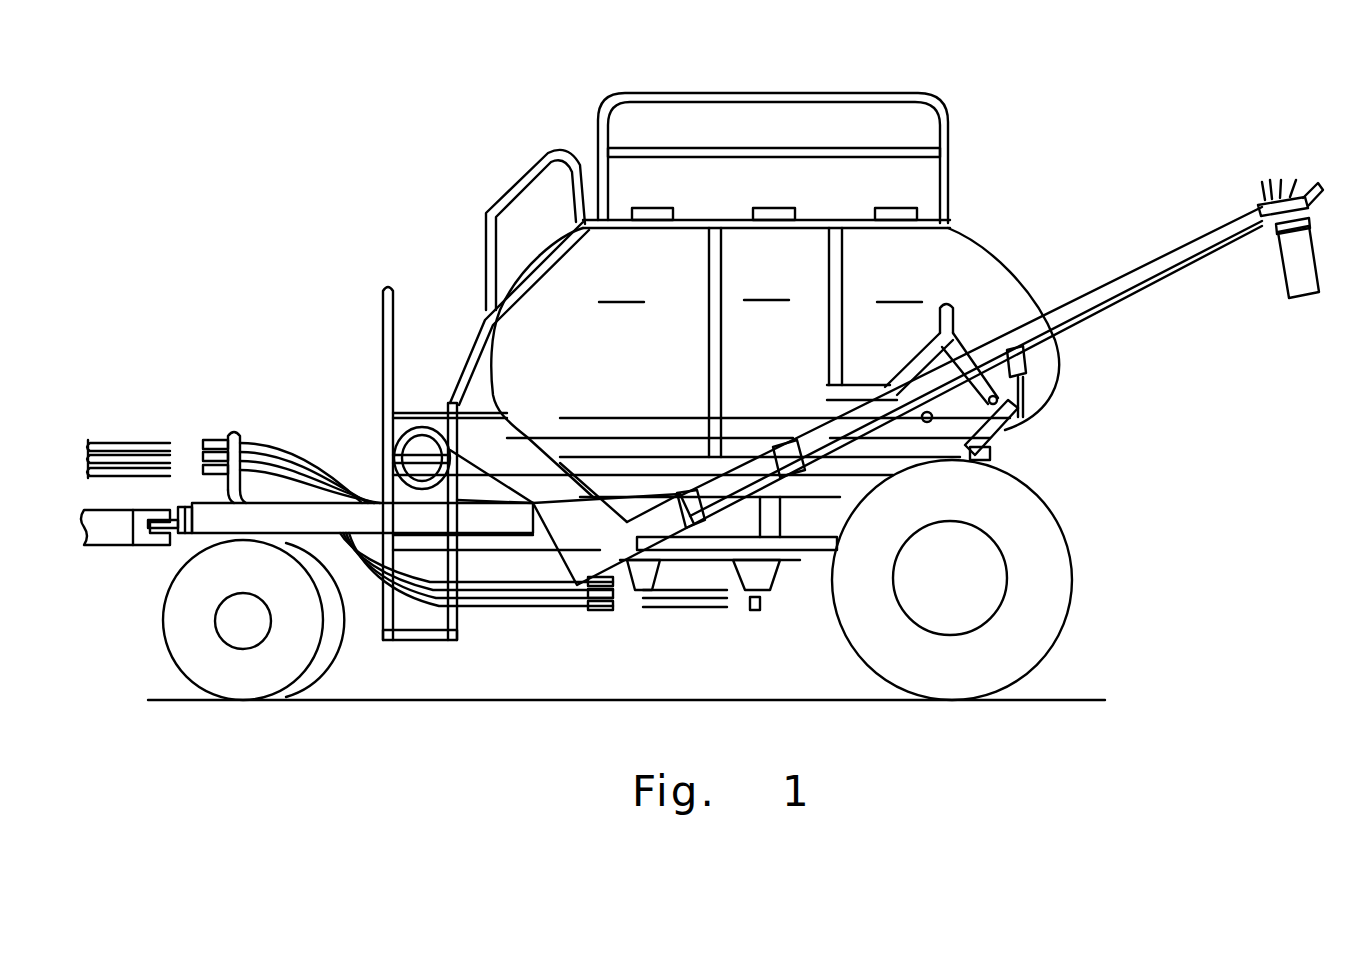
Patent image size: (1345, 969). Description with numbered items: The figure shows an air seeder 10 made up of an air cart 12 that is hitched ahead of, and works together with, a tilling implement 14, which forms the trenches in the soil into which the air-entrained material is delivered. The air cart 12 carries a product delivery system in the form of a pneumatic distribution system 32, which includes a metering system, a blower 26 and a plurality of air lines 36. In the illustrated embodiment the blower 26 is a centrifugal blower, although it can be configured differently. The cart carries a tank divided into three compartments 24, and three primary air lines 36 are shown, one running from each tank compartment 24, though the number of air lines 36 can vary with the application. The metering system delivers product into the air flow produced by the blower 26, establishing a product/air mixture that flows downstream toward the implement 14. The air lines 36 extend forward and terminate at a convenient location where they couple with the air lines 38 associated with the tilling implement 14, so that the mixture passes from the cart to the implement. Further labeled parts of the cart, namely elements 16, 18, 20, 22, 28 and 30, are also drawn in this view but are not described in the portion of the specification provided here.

The air seeder 10 is at (197, 348).
The air cart 12 is at (1043, 128).
The tilling implement 14 is at (93, 562).
The hitch 16 is at (115, 548).
The frame 18 is at (372, 497).
The front wheels 20 is at (312, 665).
The rear wheels 22 is at (1065, 617).
The tank compartments 24 is at (1013, 267).
The blower 26 is at (470, 437).
The auger 28 is at (1233, 220).
The tank lids 30 is at (651, 208).
The pneumatic distribution system 32 is at (628, 636).
The air lines 36 is at (210, 470).
The air lines 38 is at (122, 470).